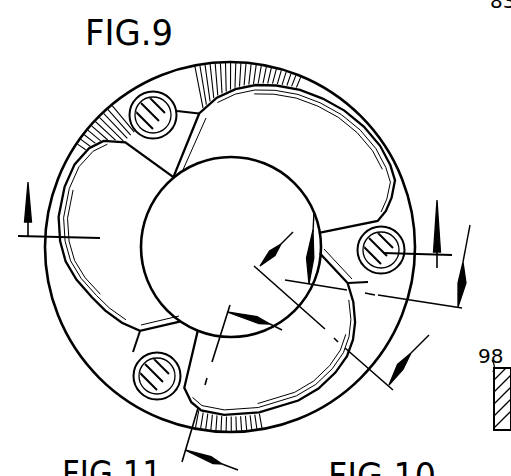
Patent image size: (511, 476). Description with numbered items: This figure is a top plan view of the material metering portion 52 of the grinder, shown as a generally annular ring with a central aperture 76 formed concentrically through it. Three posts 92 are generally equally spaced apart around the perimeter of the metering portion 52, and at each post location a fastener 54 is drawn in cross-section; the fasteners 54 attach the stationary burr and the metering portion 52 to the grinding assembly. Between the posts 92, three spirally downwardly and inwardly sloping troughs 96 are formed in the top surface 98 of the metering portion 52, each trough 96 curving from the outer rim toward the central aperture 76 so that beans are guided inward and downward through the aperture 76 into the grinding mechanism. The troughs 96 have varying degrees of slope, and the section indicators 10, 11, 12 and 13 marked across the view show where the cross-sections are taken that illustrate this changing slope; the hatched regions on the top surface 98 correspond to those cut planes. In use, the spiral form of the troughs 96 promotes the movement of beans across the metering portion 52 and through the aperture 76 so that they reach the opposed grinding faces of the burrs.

The material metering portion 52 is at (273, 63).
The fasteners 54 is at (136, 106).
The aperture 76 is at (296, 190).
The posts 92 is at (181, 108).
The troughs 96 is at (290, 117).
The top surface 98 is at (236, 62).
The section line 10- 10 is at (244, 209).
The section line 11- 11 is at (233, 390).
The section line 12- 12 is at (350, 305).
The section line 13- 13 is at (393, 248).